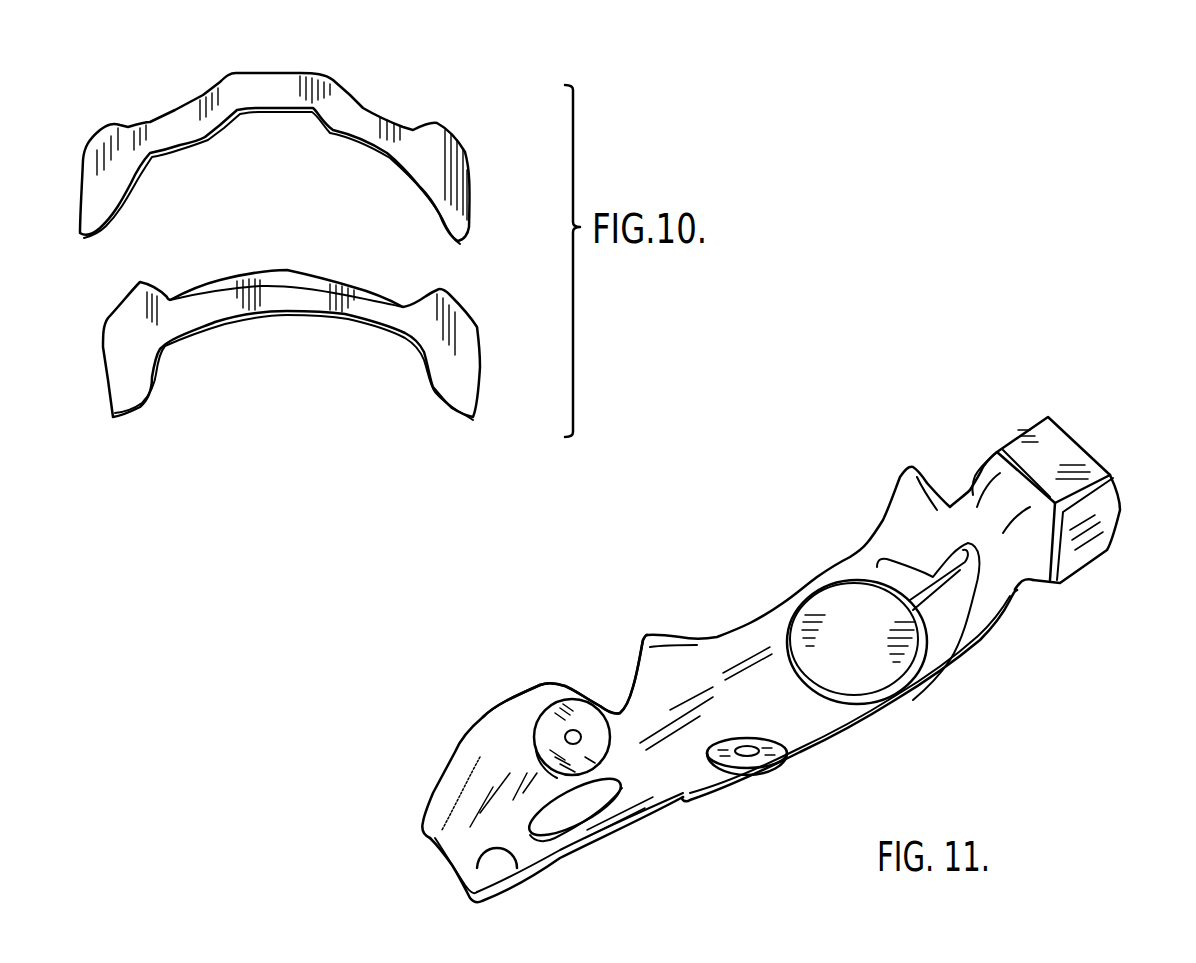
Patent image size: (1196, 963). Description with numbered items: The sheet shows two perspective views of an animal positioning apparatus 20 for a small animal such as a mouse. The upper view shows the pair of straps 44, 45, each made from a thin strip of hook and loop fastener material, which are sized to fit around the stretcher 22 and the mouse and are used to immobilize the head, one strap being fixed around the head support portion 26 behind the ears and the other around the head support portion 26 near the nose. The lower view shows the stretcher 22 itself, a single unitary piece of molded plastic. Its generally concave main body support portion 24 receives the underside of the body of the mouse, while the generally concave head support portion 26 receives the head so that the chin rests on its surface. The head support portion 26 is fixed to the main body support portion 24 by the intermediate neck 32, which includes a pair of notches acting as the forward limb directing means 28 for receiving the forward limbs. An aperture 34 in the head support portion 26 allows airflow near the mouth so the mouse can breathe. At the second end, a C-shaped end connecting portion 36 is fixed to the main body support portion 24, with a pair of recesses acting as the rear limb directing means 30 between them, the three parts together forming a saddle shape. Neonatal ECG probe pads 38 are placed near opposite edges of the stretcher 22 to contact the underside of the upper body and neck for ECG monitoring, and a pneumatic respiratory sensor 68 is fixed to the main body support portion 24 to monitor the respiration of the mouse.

In FIG. 11, the animal positioning apparatus 20 is at (773, 530).
In FIG. 11, the stretcher 22 is at (750, 633).
In FIG. 11, the main body support portion 24 is at (790, 707).
In FIG. 11, the head support portion 26 is at (490, 777).
In FIG. 11, the forward limb directing means 28 is at (613, 713).
In FIG. 11, the rear limb directing means 30 is at (1047, 590).
In FIG. 11, the intermediate neck 32 is at (687, 800).
In FIG. 11, the aperture 34 is at (480, 873).
In FIG. 11, the end connecting portion 36 is at (1057, 437).
In FIG. 11, the neonatal ECG probe pads 38 is at (550, 715).
In FIG. 10, the strap 44 is at (300, 283).
In FIG. 10, the strap 45 is at (260, 83).
In FIG. 11, the pneumatic respiratory sensor 68 is at (883, 667).